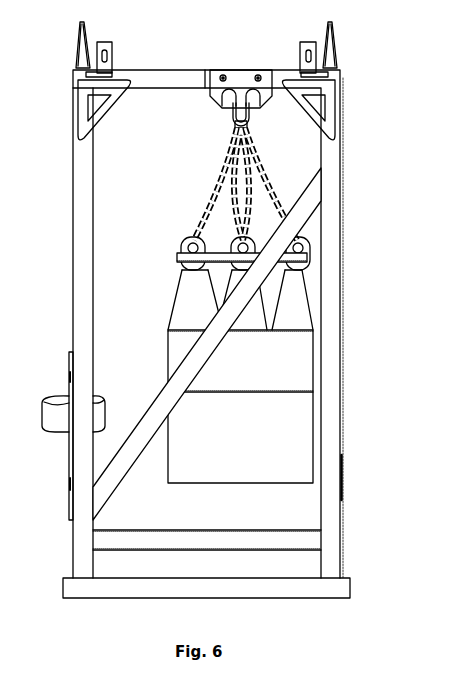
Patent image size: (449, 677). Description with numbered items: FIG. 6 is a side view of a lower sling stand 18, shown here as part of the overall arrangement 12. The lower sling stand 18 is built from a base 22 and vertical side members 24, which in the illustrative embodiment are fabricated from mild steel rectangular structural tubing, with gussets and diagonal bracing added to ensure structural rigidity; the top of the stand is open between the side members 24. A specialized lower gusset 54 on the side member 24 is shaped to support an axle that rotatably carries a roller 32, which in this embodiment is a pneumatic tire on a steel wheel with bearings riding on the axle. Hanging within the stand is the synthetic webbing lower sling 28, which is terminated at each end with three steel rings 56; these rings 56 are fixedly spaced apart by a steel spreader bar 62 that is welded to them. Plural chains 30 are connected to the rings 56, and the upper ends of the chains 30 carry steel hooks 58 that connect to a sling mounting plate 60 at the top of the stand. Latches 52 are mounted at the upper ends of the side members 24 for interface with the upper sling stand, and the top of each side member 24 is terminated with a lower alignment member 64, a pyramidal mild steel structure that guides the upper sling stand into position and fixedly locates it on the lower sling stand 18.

The lifting system 12 is at (5, 36).
The lower sling stand 18 is at (13, 301).
The base 22 is at (114, 599).
The side member 24 is at (73, 222).
The lower sling 28 is at (208, 483).
The chains 30 is at (201, 173).
The rollers 32 is at (53, 396).
The latches 52 is at (300, 56).
The lower gussets 54 is at (69, 505).
The rings 56 is at (181, 244).
The hooks 58 is at (228, 115).
The sling mounting plate 60 is at (213, 97).
The spreader bar 62 is at (177, 258).
The lower alignment member 64 is at (327, 30).